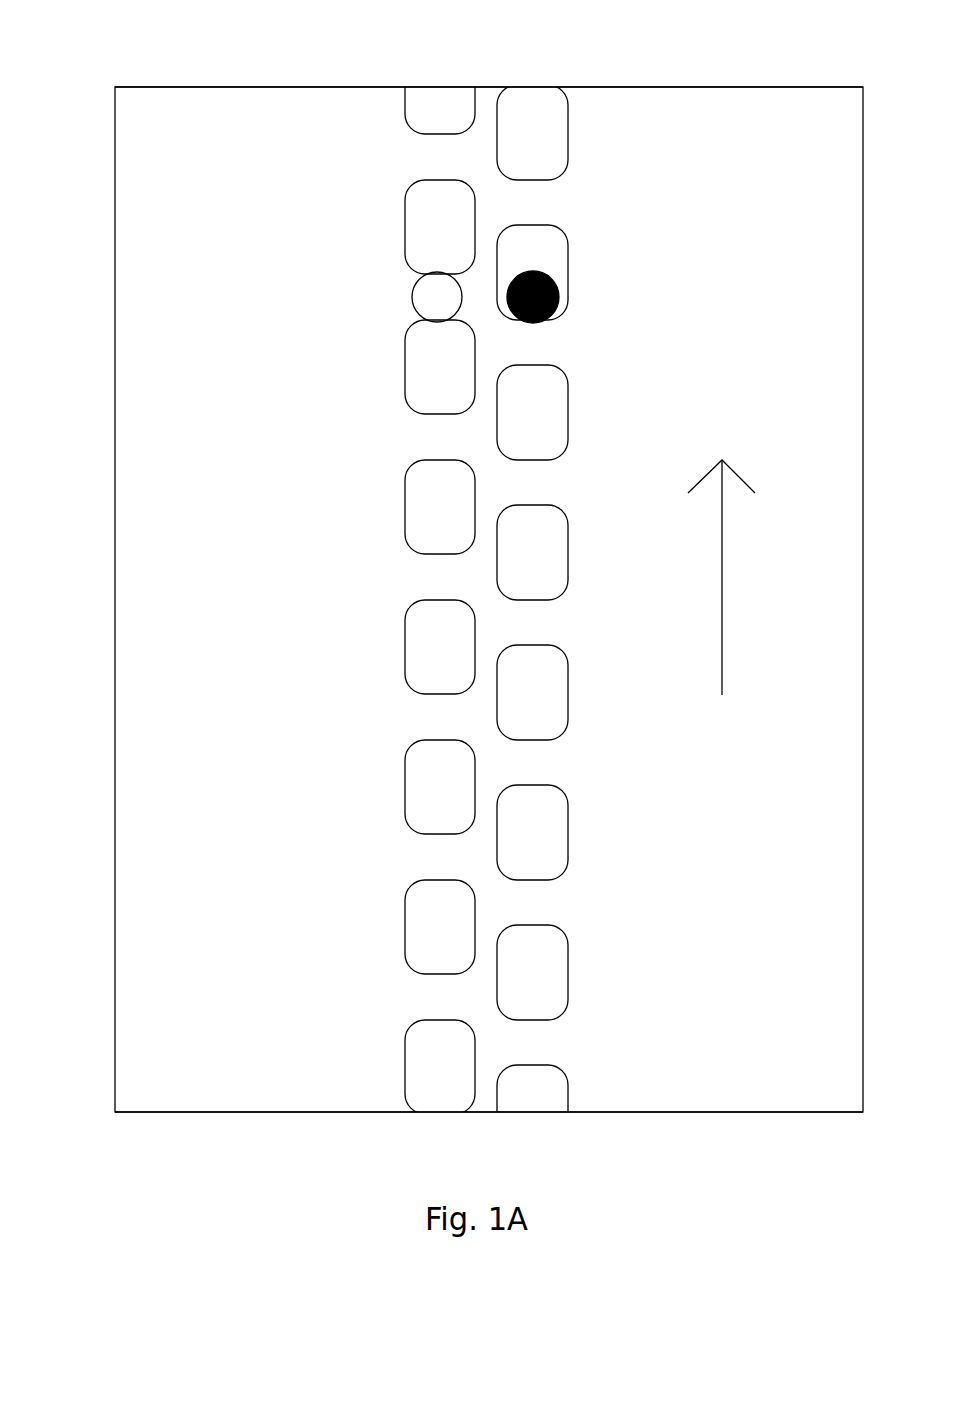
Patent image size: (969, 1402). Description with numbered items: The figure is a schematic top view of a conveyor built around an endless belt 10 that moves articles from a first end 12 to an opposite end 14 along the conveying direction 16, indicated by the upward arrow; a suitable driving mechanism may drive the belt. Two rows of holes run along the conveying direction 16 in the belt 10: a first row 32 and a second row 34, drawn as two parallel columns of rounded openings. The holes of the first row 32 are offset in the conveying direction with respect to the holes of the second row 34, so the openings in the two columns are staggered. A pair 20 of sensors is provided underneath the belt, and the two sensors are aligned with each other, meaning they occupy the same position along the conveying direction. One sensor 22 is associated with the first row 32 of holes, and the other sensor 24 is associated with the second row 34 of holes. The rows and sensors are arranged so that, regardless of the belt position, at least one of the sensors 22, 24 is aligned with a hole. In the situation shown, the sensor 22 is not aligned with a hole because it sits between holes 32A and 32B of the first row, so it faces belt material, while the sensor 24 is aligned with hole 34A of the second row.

The belt 10 is at (187, 462).
The first end 12 is at (208, 1112).
The opposite end 14 is at (208, 87).
The conveying direction 16 is at (735, 558).
The pair of sensors 20 is at (465, 270).
The sensor 22 is at (415, 303).
The sensor 24 is at (557, 315).
The first row of holes 32 is at (369, 577).
The hole 32A is at (403, 367).
The hole 32B is at (407, 228).
The second row of holes 34 is at (616, 622).
The hole 34A is at (570, 247).